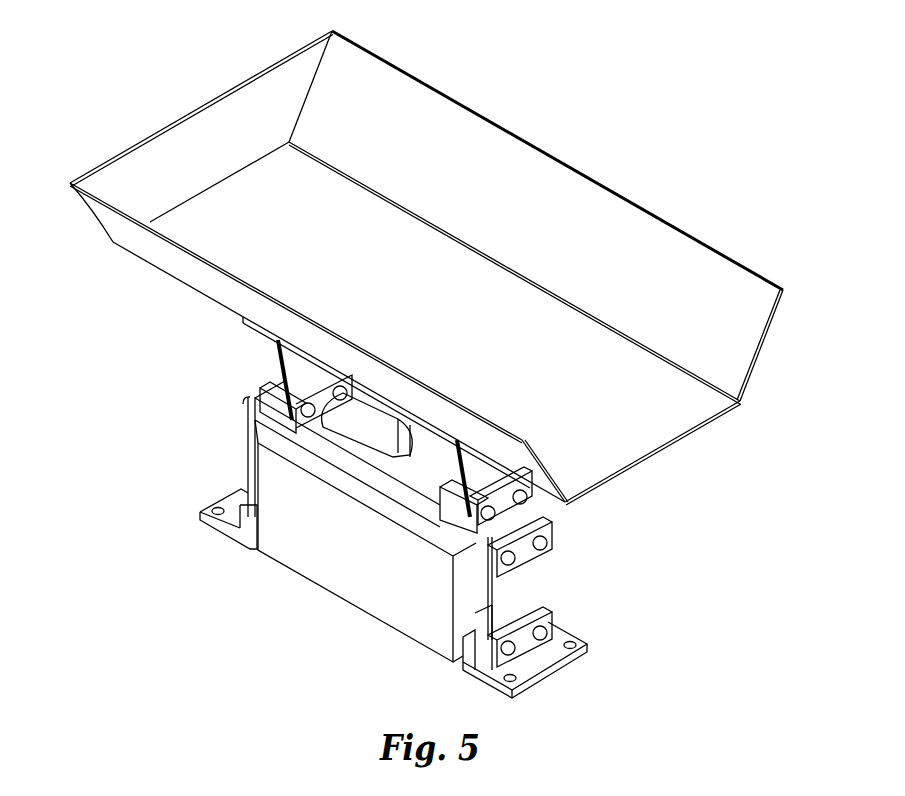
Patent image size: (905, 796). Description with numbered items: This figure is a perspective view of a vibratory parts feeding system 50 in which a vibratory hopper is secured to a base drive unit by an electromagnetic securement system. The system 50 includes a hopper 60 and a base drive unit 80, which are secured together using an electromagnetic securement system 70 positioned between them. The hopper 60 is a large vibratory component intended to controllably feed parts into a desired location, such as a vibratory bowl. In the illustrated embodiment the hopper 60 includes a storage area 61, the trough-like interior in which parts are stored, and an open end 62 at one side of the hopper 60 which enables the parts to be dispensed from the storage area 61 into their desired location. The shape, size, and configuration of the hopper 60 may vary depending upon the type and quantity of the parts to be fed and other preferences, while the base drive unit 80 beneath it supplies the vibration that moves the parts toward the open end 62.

The vibratory parts feeding system 50 is at (650, 78).
The hopper 60 is at (241, 80).
The storage area 61 is at (376, 294).
The open end 62 is at (627, 447).
The electromagnetic securement system 70 is at (258, 355).
The base drive unit 80 is at (260, 566).